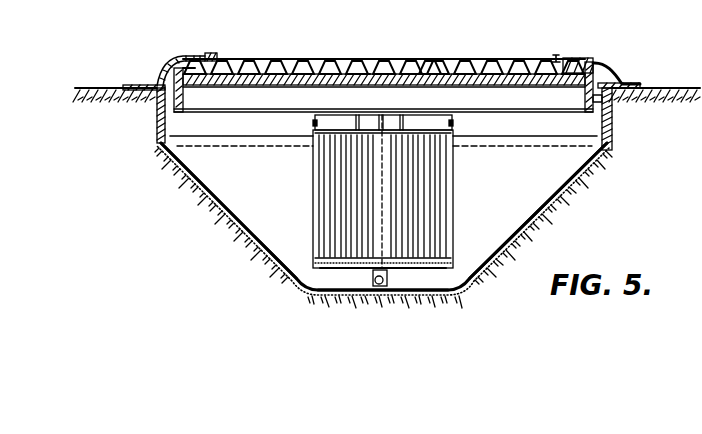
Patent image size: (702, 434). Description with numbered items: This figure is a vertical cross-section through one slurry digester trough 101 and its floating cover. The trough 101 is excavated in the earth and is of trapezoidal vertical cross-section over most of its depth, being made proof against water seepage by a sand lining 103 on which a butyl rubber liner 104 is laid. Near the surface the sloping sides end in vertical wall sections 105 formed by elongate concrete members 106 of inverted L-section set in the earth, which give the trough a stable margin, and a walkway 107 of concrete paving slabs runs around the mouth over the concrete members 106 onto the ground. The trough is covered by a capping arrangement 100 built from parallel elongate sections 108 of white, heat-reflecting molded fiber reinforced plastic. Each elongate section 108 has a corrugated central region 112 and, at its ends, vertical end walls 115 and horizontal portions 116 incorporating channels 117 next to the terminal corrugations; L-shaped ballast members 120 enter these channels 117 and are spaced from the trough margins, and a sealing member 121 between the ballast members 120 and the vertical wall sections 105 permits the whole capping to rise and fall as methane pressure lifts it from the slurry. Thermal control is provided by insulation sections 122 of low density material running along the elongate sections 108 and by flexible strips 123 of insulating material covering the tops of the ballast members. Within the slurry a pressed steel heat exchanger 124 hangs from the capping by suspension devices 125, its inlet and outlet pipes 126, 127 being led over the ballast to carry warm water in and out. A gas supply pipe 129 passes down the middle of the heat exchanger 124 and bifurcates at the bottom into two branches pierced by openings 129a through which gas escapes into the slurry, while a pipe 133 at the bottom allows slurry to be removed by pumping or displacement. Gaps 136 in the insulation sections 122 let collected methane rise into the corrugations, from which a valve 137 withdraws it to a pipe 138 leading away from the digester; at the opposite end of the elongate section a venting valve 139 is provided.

The capping arrangement 100 is at (422, 112).
The trough 101 is at (273, 194).
The sand lining 103 is at (558, 215).
The butyl rubber liner 104 is at (490, 277).
The vertical wall section 105 is at (158, 157).
The elongate concrete member 106 is at (143, 98).
The walkway 107 is at (637, 86).
The elongate section 108 is at (362, 99).
The central region 112 is at (460, 60).
The vertical end wall 115 is at (185, 111).
The horizontal portion 116 is at (588, 58).
The channel 117 is at (568, 58).
The L-shaped ballast member 120 is at (168, 66).
The sealing member 121 is at (158, 115).
The insulation section 122 is at (430, 78).
The flexible strip 123 is at (182, 86).
The heat exchanger 124 is at (338, 208).
The suspension device 125 is at (313, 118).
The inlet pipe 126 is at (358, 120).
The outlet pipe 127 is at (403, 126).
The gas supply pipe 129 is at (382, 215).
The opening 129a is at (357, 263).
The pipe 133 is at (383, 288).
The gap 136 is at (225, 70).
The valve 137 is at (213, 57).
The pipe 138 is at (192, 53).
The venting valve 139 is at (553, 57).